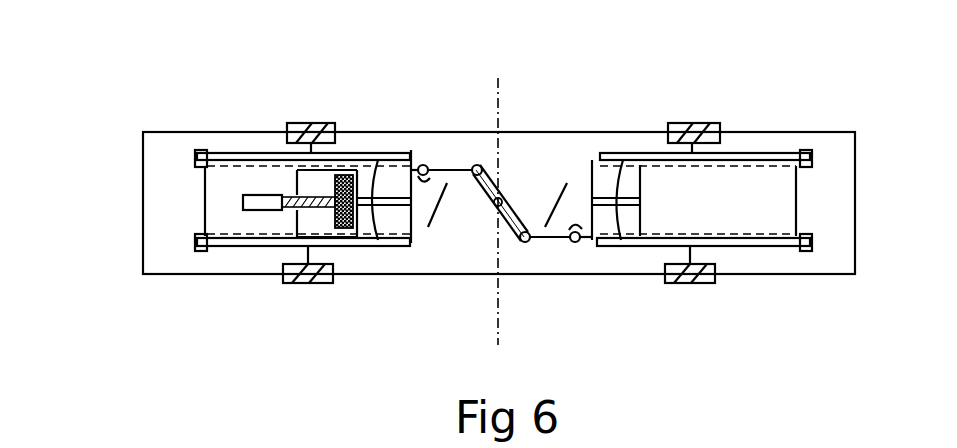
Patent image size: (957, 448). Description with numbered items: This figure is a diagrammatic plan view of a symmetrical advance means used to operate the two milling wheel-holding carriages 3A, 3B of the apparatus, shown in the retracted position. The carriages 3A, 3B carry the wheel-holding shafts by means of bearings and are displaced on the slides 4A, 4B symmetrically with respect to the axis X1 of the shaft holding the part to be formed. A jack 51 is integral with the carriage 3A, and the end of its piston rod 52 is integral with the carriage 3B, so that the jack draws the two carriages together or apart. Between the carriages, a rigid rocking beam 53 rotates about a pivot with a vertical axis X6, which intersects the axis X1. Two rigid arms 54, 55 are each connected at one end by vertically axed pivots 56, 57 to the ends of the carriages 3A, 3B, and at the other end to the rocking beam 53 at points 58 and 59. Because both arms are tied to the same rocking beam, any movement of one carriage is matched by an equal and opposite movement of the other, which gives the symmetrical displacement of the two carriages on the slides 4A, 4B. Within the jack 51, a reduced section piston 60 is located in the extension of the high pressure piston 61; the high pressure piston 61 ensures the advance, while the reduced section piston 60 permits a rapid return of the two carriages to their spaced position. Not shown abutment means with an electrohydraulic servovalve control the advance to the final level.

The carriage 3A is at (251, 181).
The carriage 3B is at (738, 220).
The slide 4A is at (197, 158).
The slide 4B is at (810, 158).
The jack 51 is at (283, 218).
The piston rod 52 is at (646, 190).
The rigid rocking beam 53 is at (506, 188).
The rigid arm 54 is at (455, 164).
The rigid arm 55 is at (554, 243).
The pivot 56 is at (422, 158).
The pivot 57 is at (580, 245).
The rocking beam connection point 58 is at (482, 163).
The rocking beam connection point 59 is at (526, 246).
The reduced section piston 60 is at (331, 293).
The high pressure piston 61 is at (343, 241).
The axis of the shaft holding the part to be formed X1 is at (485, 213).
The vertical pivot axis of the rocking beam X6 is at (496, 204).